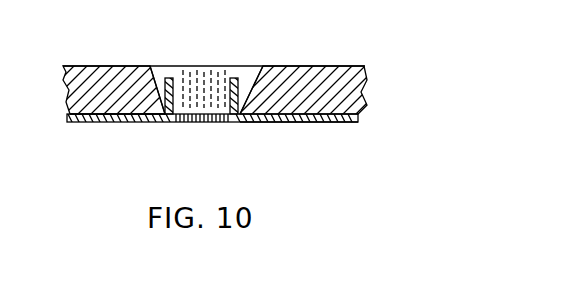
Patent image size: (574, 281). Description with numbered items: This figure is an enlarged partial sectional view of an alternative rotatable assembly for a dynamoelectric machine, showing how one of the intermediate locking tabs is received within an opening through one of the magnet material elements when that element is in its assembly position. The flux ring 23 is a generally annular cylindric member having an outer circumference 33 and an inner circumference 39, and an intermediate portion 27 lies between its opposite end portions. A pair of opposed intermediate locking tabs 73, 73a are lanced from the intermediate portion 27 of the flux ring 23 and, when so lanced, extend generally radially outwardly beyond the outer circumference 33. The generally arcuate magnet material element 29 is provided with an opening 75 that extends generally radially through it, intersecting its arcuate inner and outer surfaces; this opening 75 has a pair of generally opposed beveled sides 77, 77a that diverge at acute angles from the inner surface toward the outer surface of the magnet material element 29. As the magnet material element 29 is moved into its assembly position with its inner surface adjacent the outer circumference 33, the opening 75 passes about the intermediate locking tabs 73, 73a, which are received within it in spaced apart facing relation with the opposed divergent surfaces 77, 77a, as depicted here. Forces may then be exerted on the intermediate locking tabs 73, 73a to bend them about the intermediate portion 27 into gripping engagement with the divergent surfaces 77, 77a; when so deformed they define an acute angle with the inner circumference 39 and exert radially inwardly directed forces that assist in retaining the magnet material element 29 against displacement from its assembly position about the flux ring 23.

The beveled side 77 is at (150, 67).
The intermediate locking tab 73 is at (170, 78).
The opening 75 is at (202, 84).
The intermediate locking tab 73a is at (234, 78).
The beveled side 77a is at (257, 82).
The magnet material element 29 is at (365, 75).
The outer circumference 33 is at (259, 87).
The flux ring 23 is at (358, 121).
The intermediate portion 27 is at (152, 123).
The inner circumference 39 is at (330, 123).